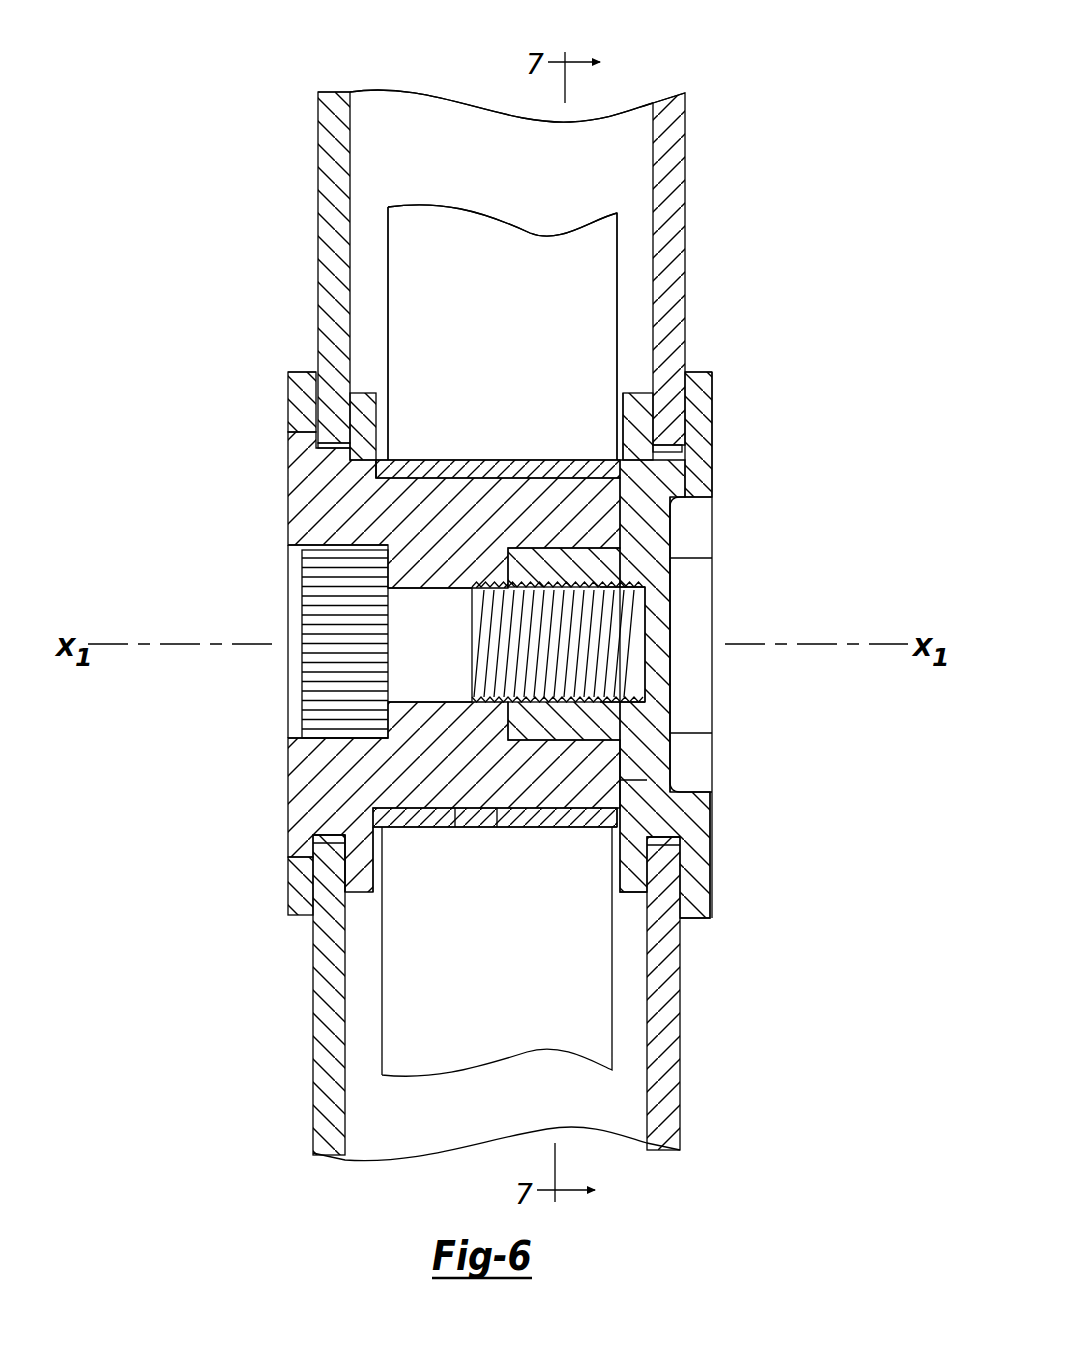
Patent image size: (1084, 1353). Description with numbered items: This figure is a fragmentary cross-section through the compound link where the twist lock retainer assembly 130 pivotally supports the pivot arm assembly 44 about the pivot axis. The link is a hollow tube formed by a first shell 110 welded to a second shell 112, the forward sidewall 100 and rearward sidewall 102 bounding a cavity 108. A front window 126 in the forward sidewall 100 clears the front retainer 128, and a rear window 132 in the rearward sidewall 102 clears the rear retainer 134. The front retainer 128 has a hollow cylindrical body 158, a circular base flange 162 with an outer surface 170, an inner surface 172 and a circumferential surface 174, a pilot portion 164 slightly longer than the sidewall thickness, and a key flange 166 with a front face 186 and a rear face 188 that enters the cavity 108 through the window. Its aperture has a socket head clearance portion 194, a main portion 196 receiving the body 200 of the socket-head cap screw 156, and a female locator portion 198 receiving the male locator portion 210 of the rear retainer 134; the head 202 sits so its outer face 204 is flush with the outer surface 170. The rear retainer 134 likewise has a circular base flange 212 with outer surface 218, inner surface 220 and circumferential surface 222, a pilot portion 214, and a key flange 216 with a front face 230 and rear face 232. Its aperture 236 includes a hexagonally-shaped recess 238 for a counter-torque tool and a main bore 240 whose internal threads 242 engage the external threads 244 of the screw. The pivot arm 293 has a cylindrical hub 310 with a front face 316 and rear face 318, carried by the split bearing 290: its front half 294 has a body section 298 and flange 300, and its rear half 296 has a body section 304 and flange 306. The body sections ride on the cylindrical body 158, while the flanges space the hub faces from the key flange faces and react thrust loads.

The pivot arm assembly 44 is at (765, 78).
The forward sidewall 100 is at (318, 137).
The rearward sidewall 102 is at (690, 165).
The cavity 108 is at (422, 118).
The first shell 110 is at (340, 88).
The second shell 112 is at (670, 95).
The front window 126 is at (300, 450).
The front retainer 128 is at (228, 347).
The twist lock retainer assembly 130 is at (818, 368).
The rear window 132 is at (690, 462).
The rear retainer 134 is at (750, 482).
The socket-head cap screw 156 is at (290, 705).
The hollow cylindrical body 158 is at (455, 828).
The circular base flange 162 is at (303, 368).
The pilot portion 164 is at (318, 870).
The key flange 166 is at (366, 390).
The outer surface 170 is at (288, 415).
The inner surface 172 is at (317, 865).
The circumferential surface 174 is at (306, 920).
The front face 186 is at (374, 878).
The rear face 188 is at (348, 870).
The socket head clearance portion 194 is at (288, 553).
The main portion 196 is at (448, 586).
The female locator portion 198 is at (520, 548).
The body 200 is at (425, 678).
The head 202 is at (300, 578).
The outer face 204 is at (288, 632).
The male locator portion 210 is at (603, 724).
The circular base flange 212 is at (715, 415).
The pilot portion 214 is at (690, 862).
The key flange 216 is at (638, 390).
The outer surface 218 is at (708, 912).
The inner surface 220 is at (668, 885).
The circumferential surface 222 is at (700, 368).
The front face 230 is at (625, 422).
The rear face 232 is at (628, 880).
The aperture 236 is at (690, 658).
The hexagonally-shaped recess 238 is at (703, 530).
The main bore 240 is at (658, 695).
The internal threads 242 is at (650, 598).
The external threads 244 is at (637, 570).
The split bearing 290 is at (485, 838).
The pivot arm 293 is at (500, 222).
The front half 294 is at (450, 456).
The rear half 296 is at (548, 830).
The body section 298 is at (493, 462).
The flange 300 is at (384, 452).
The body section 304 is at (523, 828).
The flange 306 is at (612, 840).
The cylindrical hub 310 is at (553, 242).
The front face 316 is at (382, 232).
The rear face 318 is at (622, 232).